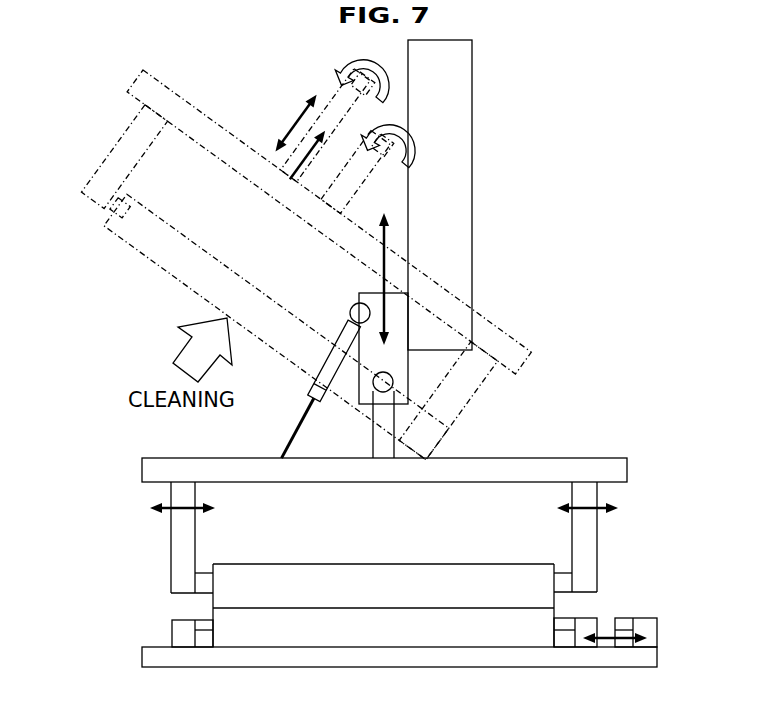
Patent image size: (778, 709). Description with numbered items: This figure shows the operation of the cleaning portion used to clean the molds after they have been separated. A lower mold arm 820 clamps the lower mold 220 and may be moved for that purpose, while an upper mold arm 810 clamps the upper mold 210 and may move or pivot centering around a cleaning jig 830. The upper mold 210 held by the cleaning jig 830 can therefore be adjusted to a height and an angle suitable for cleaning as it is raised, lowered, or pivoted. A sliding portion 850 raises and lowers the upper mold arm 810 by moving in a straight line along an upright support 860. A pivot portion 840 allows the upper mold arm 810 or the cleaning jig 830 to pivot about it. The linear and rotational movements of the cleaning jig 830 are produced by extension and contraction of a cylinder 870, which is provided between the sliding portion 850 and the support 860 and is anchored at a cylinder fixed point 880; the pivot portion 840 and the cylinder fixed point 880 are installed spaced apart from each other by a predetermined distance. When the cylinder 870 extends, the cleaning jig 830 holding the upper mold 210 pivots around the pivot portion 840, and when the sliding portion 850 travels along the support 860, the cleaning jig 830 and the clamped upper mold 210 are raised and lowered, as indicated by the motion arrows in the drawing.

The upper mold 210 is at (233, 582).
The lower mold 220 is at (245, 635).
The upper mold arm 810 is at (582, 573).
The lower mold arm 820 is at (441, 603).
The cleaning jig 830 is at (587, 473).
The pivot portion 840 is at (393, 377).
The sliding portion 850 is at (393, 325).
The support 860 is at (438, 223).
The cylinder 870 is at (340, 343).
The cylinder fixed point 880 is at (352, 305).